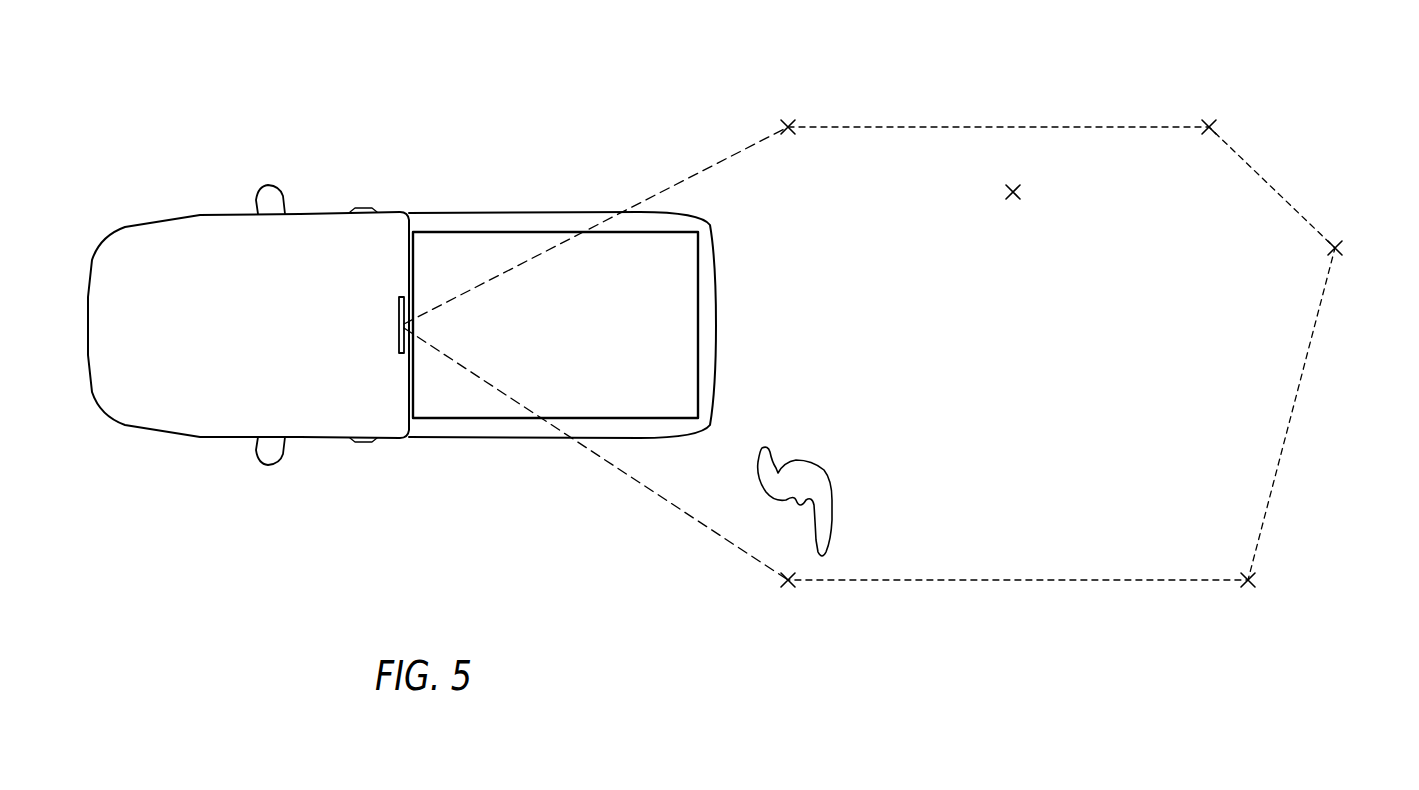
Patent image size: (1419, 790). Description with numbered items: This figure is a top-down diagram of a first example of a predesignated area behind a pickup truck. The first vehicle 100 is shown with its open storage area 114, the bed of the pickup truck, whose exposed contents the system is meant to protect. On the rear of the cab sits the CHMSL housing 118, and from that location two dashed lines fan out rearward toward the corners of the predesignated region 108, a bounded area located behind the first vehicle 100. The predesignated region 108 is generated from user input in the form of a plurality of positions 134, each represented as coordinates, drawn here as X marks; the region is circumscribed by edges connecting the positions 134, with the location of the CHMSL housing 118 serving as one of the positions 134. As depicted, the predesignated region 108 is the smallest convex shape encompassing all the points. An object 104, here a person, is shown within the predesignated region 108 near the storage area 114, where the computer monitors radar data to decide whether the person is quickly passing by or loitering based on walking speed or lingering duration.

The first vehicle 100 is at (323, 206).
The object 104 is at (820, 458).
The predesignated region 108 is at (1287, 435).
The storage area 114 is at (628, 333).
The CHMSL housing 118 is at (405, 328).
The positions 134 is at (786, 122).